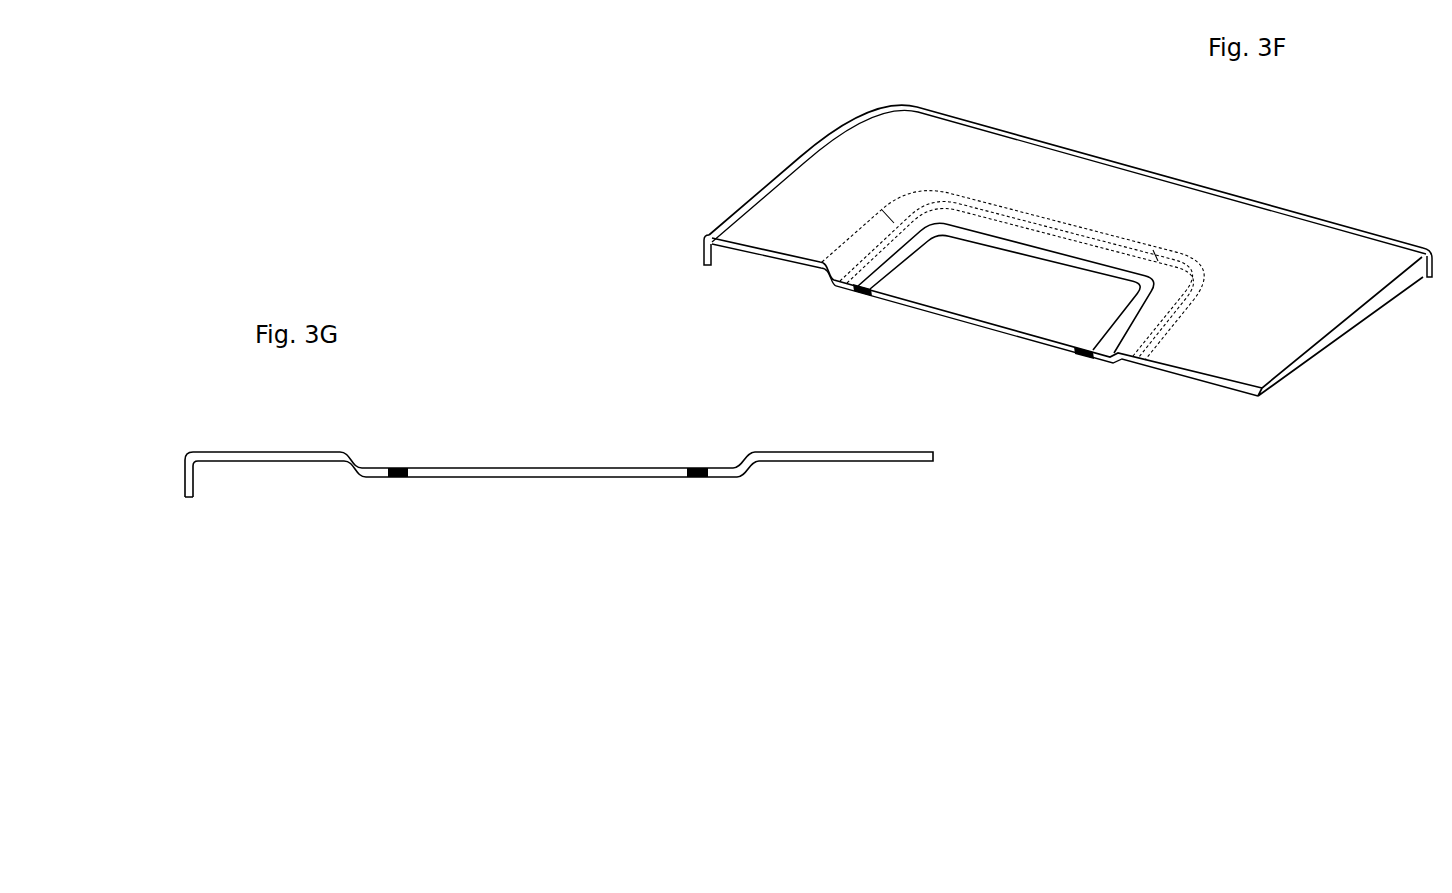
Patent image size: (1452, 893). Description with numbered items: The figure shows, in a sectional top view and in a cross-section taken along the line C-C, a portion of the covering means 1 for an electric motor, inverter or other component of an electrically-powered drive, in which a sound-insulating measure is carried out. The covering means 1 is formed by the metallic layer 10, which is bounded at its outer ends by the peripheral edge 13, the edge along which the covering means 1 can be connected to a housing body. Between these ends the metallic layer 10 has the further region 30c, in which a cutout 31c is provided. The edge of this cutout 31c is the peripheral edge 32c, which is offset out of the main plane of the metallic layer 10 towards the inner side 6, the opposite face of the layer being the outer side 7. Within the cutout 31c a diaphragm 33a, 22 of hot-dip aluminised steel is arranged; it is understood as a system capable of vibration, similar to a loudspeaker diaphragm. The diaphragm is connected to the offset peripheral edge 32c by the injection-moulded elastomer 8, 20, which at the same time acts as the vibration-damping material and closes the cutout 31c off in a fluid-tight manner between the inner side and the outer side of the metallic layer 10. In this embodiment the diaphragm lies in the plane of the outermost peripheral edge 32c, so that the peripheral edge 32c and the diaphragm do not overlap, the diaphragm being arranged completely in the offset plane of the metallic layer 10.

In FIG. 3F, the covering means 1 is at (893, 137).
In FIG. 3G, the covering means 1 is at (773, 457).
In FIG. 3F, the metallic layer 10 is at (1293, 228).
In FIG. 3G, the metallic layer 10 is at (242, 462).
In FIG. 3F, the peripheral edge 13 is at (703, 267).
In FIG. 3G, the peripheral edge 13 is at (182, 495).
In FIG. 3F, the region 30c is at (987, 302).
In FIG. 3G, the region 30c is at (487, 503).
In FIG. 3F, the cutout 31c is at (990, 284).
In FIG. 3G, the cutout 31c is at (578, 509).
In FIG. 3F, the peripheral edge 32c is at (1121, 347).
In FIG. 3G, the peripheral edge 32c is at (712, 480).
In FIG. 3F, the injection-moulded elastomer 8 is at (951, 359).
In FIG. 3G, the injection-moulded elastomer 8 is at (548, 439).
In FIG. 3F, the vibration-damping material 20 is at (858, 291).
In FIG. 3G, the vibration-damping material 20 is at (400, 470).
In FIG. 3G, the diaphragm 33a is at (549, 446).
In FIG. 3G, the contact region 22 is at (540, 470).
In FIG. 3G, the outer side 7 is at (828, 458).
In FIG. 3G, the inner side 6 is at (808, 463).